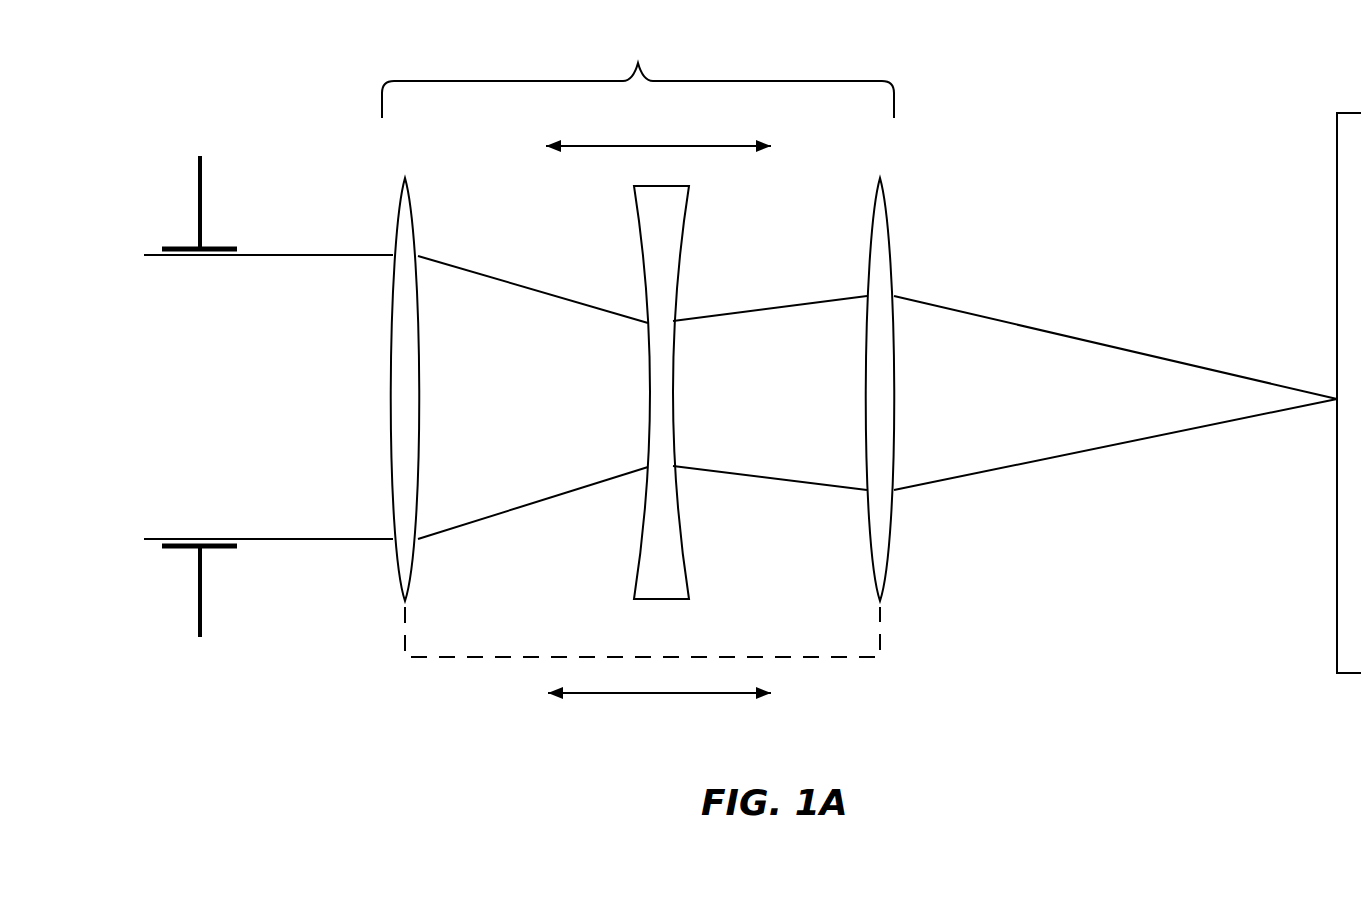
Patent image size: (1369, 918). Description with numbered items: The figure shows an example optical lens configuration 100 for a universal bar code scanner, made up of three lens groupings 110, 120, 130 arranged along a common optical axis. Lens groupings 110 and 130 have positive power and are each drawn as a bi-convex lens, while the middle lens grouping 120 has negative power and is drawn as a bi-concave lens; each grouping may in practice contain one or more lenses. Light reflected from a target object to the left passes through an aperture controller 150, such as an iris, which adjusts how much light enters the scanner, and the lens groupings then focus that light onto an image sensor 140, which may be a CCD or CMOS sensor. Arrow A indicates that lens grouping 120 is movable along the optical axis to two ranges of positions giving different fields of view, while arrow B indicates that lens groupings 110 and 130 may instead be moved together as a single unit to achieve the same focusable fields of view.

The optical lens configuration 100 is at (638, 77).
The lens grouping 110 is at (410, 232).
The lens grouping 120 is at (683, 240).
The lens grouping 130 is at (885, 232).
The image sensor 140 is at (1343, 112).
The aperture controller 150 is at (199, 158).
The arrow A is at (740, 145).
The arrow B is at (728, 694).